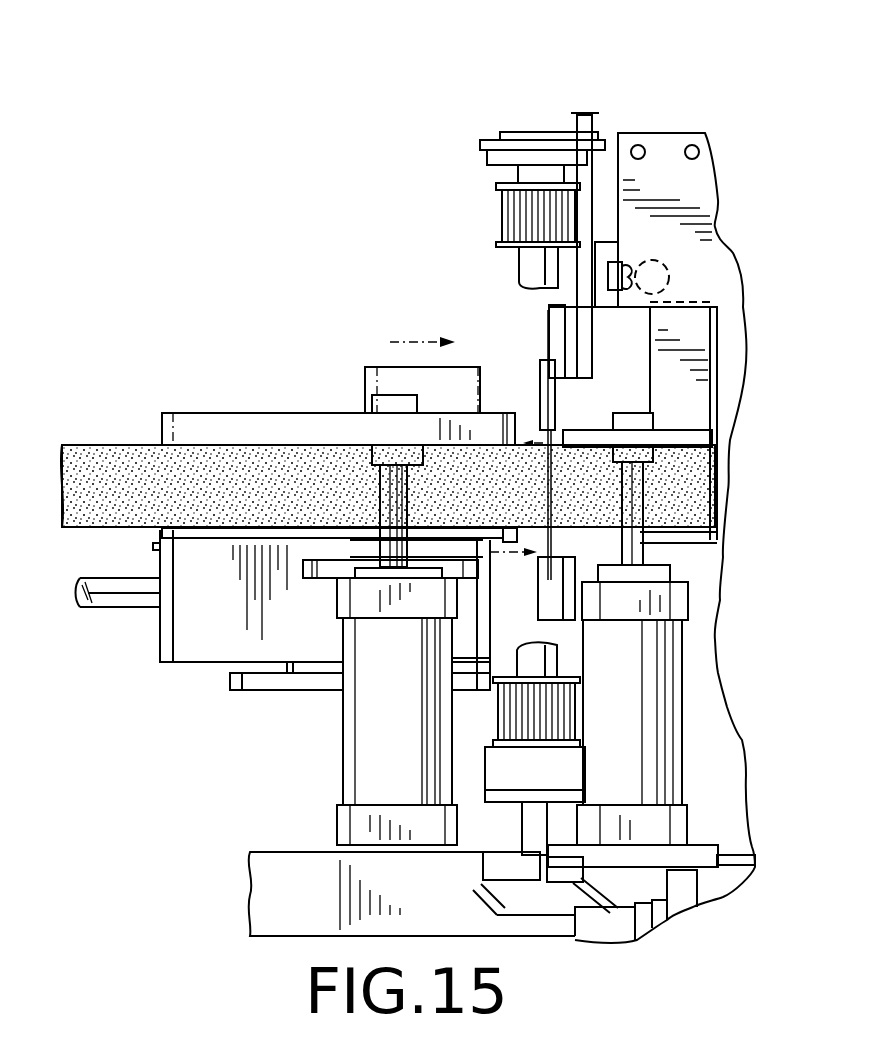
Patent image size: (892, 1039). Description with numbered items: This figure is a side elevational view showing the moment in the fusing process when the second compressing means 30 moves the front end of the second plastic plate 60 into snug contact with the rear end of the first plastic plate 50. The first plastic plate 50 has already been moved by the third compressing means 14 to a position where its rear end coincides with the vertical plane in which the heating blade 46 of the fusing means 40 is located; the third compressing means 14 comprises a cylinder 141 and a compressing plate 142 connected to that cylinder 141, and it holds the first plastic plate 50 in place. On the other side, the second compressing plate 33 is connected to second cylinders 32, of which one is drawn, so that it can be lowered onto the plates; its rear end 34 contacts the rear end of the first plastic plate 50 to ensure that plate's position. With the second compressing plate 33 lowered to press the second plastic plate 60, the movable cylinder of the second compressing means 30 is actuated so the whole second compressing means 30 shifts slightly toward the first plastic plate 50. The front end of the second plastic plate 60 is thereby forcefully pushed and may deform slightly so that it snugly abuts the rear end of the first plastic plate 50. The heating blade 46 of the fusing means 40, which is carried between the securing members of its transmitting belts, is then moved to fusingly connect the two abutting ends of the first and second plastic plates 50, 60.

The third compressing means 14 is at (702, 604).
The second compressing means 30 is at (264, 700).
The second cylinder 32 is at (347, 757).
The second compressing plate 33 is at (223, 427).
The rear end of the second compressing plate 34 is at (447, 380).
The fusing means 40 is at (534, 118).
The heating blade 46 is at (545, 540).
The first plastic plate 50 is at (690, 493).
The second plastic plate 60 is at (328, 477).
The cylinder 141 is at (662, 727).
The compressing plate 142 is at (690, 438).